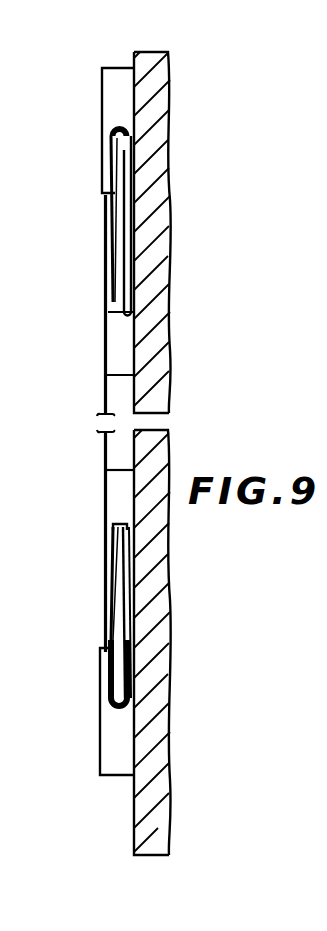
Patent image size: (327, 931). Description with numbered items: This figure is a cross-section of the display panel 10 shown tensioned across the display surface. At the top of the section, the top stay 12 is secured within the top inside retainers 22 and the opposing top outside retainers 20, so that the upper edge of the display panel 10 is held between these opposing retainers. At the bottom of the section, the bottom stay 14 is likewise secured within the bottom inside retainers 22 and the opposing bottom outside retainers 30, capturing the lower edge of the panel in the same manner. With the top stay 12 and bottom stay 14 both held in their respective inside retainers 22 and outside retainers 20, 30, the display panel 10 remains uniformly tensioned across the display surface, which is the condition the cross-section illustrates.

The display panel 10 is at (104, 385).
The top stay 12 is at (128, 224).
The bottom stay 14 is at (128, 629).
The top outside retainers 20 is at (112, 121).
The inside retainers 22 is at (118, 342).
The bottom outside retainers 30 is at (110, 748).